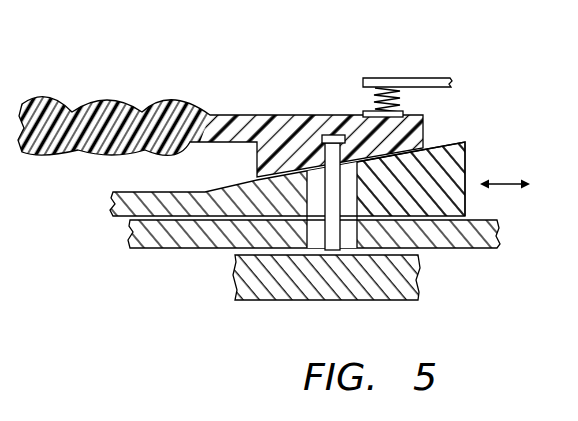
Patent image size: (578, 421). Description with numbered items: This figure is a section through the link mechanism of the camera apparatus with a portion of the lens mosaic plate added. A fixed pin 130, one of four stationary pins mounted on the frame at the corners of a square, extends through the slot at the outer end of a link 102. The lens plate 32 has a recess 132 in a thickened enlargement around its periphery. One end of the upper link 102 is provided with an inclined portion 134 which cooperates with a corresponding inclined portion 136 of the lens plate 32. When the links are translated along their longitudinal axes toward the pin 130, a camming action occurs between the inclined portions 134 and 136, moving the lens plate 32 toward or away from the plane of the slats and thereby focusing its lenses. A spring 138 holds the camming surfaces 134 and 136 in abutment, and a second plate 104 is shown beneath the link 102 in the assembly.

The lens plate 32 is at (108, 110).
The link 102 is at (129, 214).
The lower plate 104 is at (198, 238).
The fixed pin 130 is at (330, 230).
The recess 132 is at (333, 140).
The inclined portion 134 is at (435, 143).
The inclined portion 136 is at (407, 116).
The spring 138 is at (375, 95).